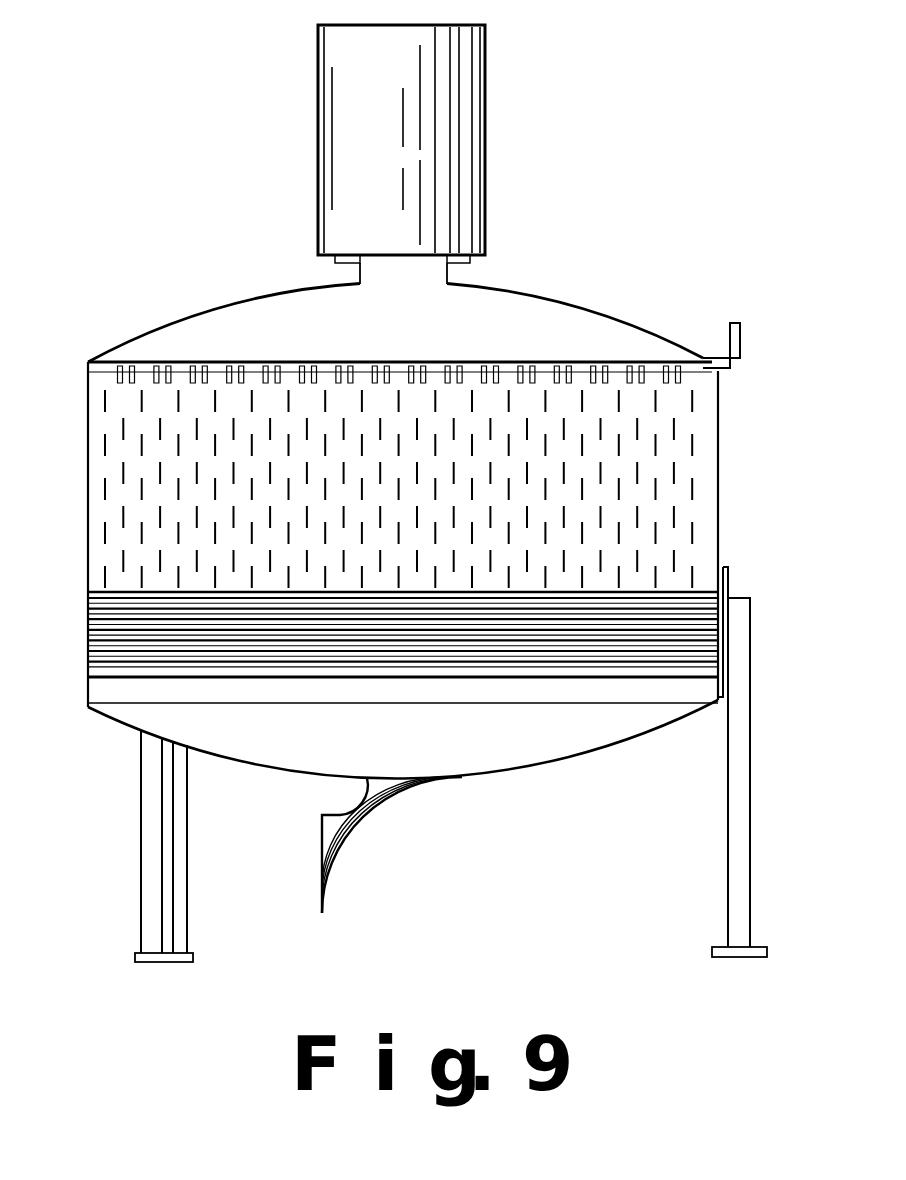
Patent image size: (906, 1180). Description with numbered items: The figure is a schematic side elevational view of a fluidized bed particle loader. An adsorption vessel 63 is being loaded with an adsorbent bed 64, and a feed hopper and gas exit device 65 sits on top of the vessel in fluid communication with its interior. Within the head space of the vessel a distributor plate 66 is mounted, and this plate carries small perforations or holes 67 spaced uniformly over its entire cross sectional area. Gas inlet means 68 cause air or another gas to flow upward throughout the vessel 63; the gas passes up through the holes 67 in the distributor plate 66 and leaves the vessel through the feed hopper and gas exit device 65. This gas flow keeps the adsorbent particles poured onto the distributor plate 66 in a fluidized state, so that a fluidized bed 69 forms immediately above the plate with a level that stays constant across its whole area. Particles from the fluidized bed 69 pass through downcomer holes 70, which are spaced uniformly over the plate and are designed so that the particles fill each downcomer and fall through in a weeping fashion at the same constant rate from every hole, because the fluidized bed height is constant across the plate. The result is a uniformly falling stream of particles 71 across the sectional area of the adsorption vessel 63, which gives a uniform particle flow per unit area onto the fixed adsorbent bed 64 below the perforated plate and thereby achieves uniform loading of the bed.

The adsorption vessel 63 is at (720, 397).
The adsorbent bed 64 is at (687, 647).
The feed hopper and gas exit device 65 is at (485, 152).
The distributor plate 66 is at (728, 340).
The holes 67 is at (180, 362).
The gas inlet means 68 is at (418, 802).
The fluidized bed 69 is at (478, 333).
The downcomer holes 70 is at (116, 383).
The falling stream of particles 71 is at (675, 518).